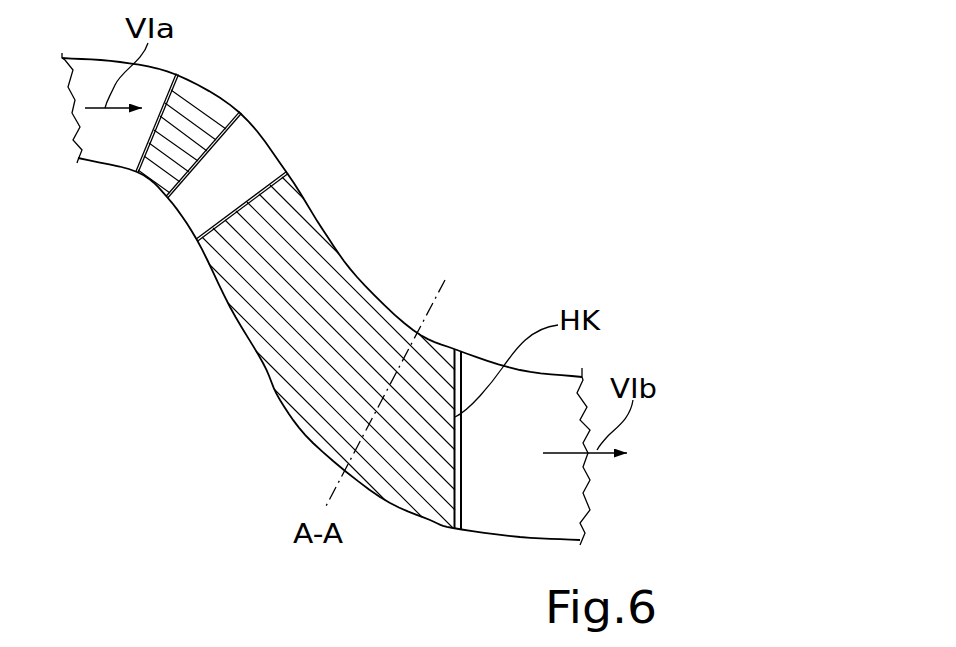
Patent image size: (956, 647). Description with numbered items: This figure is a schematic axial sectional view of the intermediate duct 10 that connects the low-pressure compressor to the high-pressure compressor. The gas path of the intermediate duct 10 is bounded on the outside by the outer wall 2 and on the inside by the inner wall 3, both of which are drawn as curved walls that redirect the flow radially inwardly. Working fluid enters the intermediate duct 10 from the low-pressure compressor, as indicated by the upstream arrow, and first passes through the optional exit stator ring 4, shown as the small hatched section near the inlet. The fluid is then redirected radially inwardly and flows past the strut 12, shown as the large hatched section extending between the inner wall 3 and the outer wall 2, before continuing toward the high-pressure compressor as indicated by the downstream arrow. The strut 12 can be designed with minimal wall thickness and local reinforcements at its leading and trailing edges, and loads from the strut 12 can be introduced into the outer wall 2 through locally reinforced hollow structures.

The outer wall 2 is at (320, 225).
The inner wall 3 is at (267, 377).
The exit stator ring 4 is at (148, 197).
The intermediate duct 10 is at (326, 299).
The strut 12 is at (333, 307).